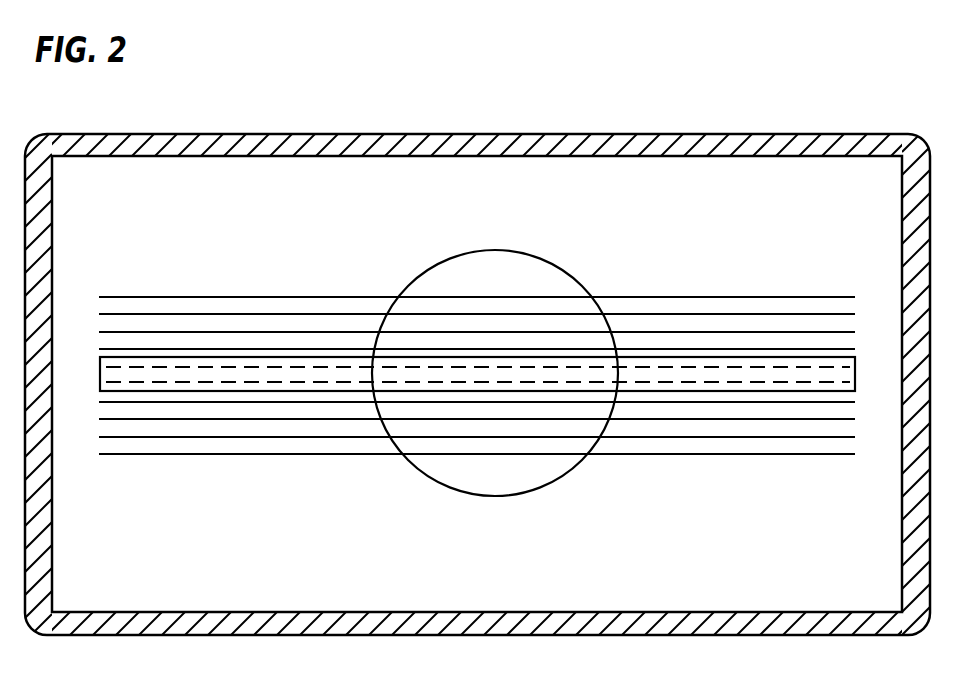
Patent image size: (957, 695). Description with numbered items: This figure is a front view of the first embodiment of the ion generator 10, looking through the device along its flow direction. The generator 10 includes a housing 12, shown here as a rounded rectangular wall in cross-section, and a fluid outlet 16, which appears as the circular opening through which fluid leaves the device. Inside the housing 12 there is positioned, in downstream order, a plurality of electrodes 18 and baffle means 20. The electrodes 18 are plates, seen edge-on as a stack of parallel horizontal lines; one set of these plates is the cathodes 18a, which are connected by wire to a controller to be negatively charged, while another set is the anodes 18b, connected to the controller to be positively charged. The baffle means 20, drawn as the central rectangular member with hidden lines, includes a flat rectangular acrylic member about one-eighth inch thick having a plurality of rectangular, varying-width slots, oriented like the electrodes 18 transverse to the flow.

The ion generator 10 is at (600, 76).
The housing 12 is at (719, 134).
The fluid outlet 16 is at (563, 269).
The electrodes 18 is at (697, 469).
The cathodes 18a is at (143, 297).
The anodes 18b is at (251, 314).
The baffle means 20 is at (100, 375).